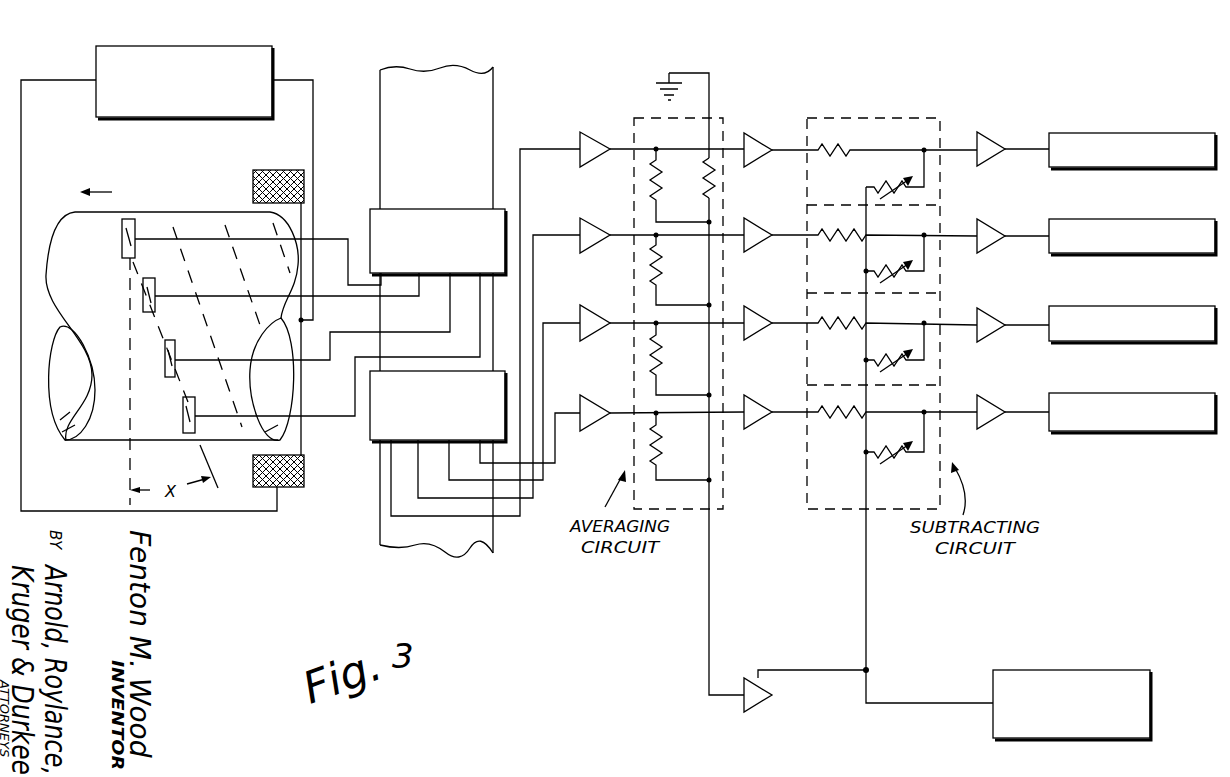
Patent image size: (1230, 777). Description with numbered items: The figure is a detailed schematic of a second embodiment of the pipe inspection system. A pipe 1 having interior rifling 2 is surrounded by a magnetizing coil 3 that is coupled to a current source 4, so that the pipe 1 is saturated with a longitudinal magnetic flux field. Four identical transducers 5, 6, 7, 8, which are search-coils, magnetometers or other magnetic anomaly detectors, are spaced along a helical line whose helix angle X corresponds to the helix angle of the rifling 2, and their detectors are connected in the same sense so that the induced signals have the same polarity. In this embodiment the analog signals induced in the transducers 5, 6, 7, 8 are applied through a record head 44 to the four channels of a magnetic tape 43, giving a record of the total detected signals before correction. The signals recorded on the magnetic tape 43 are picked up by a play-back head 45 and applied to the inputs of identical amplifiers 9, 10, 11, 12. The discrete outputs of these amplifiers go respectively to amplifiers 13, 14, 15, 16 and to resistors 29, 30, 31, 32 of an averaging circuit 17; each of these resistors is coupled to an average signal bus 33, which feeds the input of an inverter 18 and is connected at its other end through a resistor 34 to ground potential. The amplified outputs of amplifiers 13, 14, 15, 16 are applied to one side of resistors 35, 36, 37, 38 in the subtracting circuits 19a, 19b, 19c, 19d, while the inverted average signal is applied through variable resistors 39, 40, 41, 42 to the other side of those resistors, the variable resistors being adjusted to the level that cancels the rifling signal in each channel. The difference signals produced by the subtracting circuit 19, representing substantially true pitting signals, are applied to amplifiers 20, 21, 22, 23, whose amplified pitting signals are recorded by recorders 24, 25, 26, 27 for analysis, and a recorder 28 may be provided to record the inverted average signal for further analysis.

The pipe 1 is at (163, 212).
The rifling 2 is at (238, 253).
The magnetizing coil 3 is at (274, 170).
The current source 4 is at (188, 46).
The transducer 5 is at (135, 228).
The transducer 6 is at (155, 287).
The transducer 7 is at (175, 349).
The transducer 8 is at (195, 408).
The amplifier 9 is at (589, 131).
The amplifier 10 is at (589, 217).
The amplifier 11 is at (589, 304).
The amplifier 12 is at (589, 394).
The amplifier 13 is at (752, 131).
The amplifier 14 is at (752, 216).
The amplifier 15 is at (752, 304).
The amplifier 16 is at (752, 393).
The averaging circuit 17 is at (723, 472).
The inverter 18 is at (750, 714).
The subtracting circuit 19 is at (848, 118).
The subtracting circuit 19a is at (922, 118).
The subtracting circuit 19b is at (930, 224).
The subtracting circuit 19c is at (930, 312).
The subtracting circuit 19d is at (930, 400).
The amplifier 20 is at (990, 133).
The amplifier 21 is at (997, 250).
The amplifier 22 is at (1000, 318).
The amplifier 23 is at (997, 427).
The recorder 24 is at (1150, 133).
The recorder 25 is at (1142, 219).
The recorder 26 is at (1144, 306).
The recorder 27 is at (1135, 393).
The recorder 28 is at (1125, 670).
The resistor 29 is at (662, 172).
The resistor 30 is at (662, 262).
The resistor 31 is at (662, 352).
The resistor 32 is at (662, 437).
The average signal bus 33 is at (709, 604).
The resistor 34 is at (703, 198).
The resistor 35 is at (856, 149).
The resistor 36 is at (830, 234).
The resistor 37 is at (836, 322).
The resistor 38 is at (840, 420).
The variable resistor 39 is at (888, 181).
The variable resistor 40 is at (910, 268).
The variable resistor 41 is at (908, 356).
The variable resistor 42 is at (908, 448).
The magnetic tape 43 is at (442, 162).
The record head 44 is at (370, 212).
The play-back head 45 is at (370, 428).